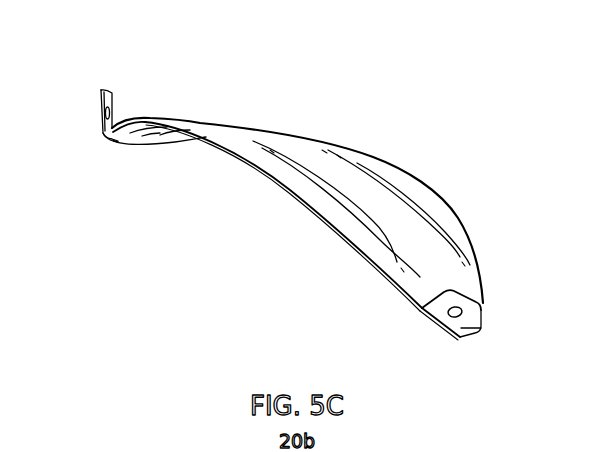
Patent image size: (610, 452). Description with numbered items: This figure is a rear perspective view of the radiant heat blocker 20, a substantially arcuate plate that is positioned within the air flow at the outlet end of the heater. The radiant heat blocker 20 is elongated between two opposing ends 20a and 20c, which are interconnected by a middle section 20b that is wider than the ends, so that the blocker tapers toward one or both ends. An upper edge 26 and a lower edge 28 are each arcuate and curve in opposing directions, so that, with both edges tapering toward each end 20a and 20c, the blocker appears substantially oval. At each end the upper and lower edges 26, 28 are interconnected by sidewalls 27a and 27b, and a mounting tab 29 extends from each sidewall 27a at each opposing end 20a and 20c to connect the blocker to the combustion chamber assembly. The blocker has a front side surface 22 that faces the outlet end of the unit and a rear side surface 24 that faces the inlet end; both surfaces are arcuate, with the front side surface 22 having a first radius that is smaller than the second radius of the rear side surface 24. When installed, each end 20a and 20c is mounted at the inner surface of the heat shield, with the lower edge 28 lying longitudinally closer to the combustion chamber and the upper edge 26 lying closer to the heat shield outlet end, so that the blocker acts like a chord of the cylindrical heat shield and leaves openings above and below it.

The radiant heat blocker 20 is at (304, 220).
The opposing end 20a is at (102, 80).
The middle section 20b is at (495, 276).
The opposing end 20c is at (495, 275).
The front side surface 22 is at (158, 140).
The rear side surface 24 is at (315, 163).
The upper edge 26 is at (463, 224).
The sidewall 27a is at (113, 143).
The sidewall 27b is at (135, 143).
The lower edge 28 is at (330, 223).
The mounting tab 29 is at (112, 100).